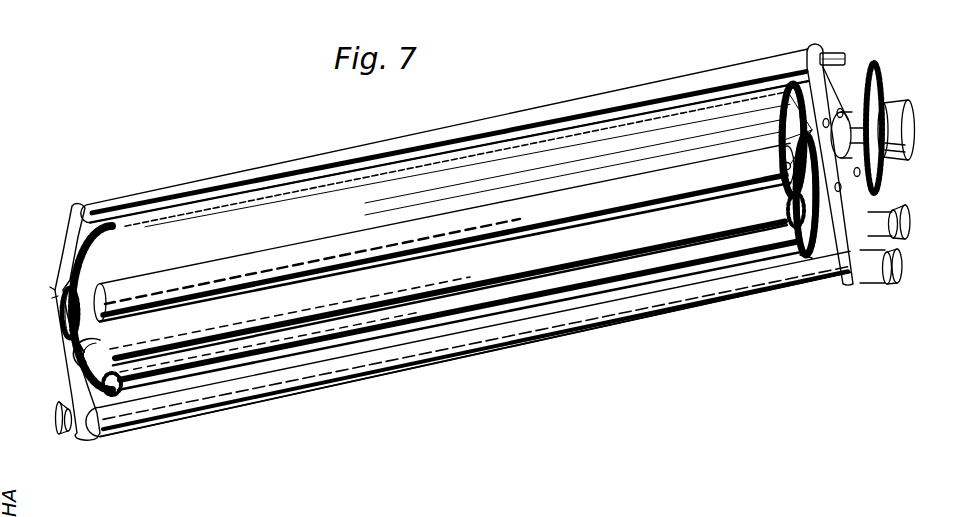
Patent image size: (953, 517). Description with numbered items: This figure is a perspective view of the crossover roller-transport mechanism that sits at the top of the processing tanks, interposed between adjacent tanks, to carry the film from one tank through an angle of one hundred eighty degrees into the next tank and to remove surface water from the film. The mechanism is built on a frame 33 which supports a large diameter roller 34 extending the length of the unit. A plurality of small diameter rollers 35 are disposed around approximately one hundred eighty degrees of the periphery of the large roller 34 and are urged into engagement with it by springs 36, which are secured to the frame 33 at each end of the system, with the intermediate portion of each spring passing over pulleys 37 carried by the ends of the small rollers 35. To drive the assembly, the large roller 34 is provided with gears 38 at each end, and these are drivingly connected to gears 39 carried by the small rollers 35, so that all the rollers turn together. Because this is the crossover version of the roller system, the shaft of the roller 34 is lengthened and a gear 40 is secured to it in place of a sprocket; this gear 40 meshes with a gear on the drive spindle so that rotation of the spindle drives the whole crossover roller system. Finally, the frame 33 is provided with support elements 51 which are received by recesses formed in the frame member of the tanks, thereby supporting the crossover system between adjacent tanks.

The frame 33 is at (80, 388).
The large diameter roller 34 is at (350, 191).
The small diameter rollers 35 is at (292, 338).
The springs 36 is at (74, 363).
The pulleys 37 is at (73, 340).
The gears 38 is at (97, 242).
The gears 39 is at (60, 297).
The gear 40 is at (898, 104).
The support elements 51 is at (61, 427).